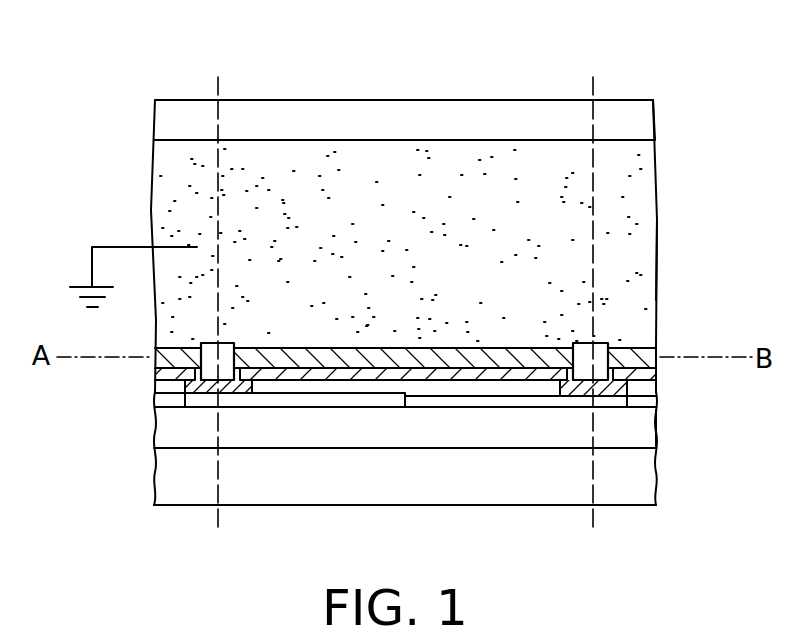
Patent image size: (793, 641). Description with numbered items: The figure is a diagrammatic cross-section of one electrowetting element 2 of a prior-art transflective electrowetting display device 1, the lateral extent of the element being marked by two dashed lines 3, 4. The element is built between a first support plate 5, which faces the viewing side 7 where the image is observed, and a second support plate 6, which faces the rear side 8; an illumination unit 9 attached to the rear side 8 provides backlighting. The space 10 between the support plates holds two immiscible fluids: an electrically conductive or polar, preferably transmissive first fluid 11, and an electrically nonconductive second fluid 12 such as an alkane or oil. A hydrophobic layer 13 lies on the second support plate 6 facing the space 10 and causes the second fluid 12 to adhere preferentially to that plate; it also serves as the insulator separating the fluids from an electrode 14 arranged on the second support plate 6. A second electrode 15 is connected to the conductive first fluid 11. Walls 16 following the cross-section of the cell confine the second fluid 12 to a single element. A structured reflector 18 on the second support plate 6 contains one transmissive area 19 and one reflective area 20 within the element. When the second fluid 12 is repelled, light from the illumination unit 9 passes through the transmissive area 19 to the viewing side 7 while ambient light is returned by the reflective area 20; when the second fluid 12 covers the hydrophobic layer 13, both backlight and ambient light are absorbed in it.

The transflective electrowetting display device 1 is at (690, 99).
The electrowetting element 2 is at (411, 99).
The dashed line 3 is at (221, 82).
The dashed line 4 is at (594, 83).
The first support plate 5 is at (636, 108).
The second support plate 6 is at (643, 428).
The viewing side 7 is at (273, 99).
The rear side 8 is at (322, 450).
The illumination unit 9 is at (643, 473).
The space 10 is at (472, 157).
The first fluid 11 is at (637, 245).
The second fluid 12 is at (555, 362).
The hydrophobic layer 13 is at (470, 360).
The electrode 14 is at (285, 390).
The second electrode 15 is at (92, 258).
The walls 16 is at (210, 343).
The structured reflector 18 is at (643, 400).
The transmissive area 19 is at (472, 402).
The reflective area 20 is at (372, 400).